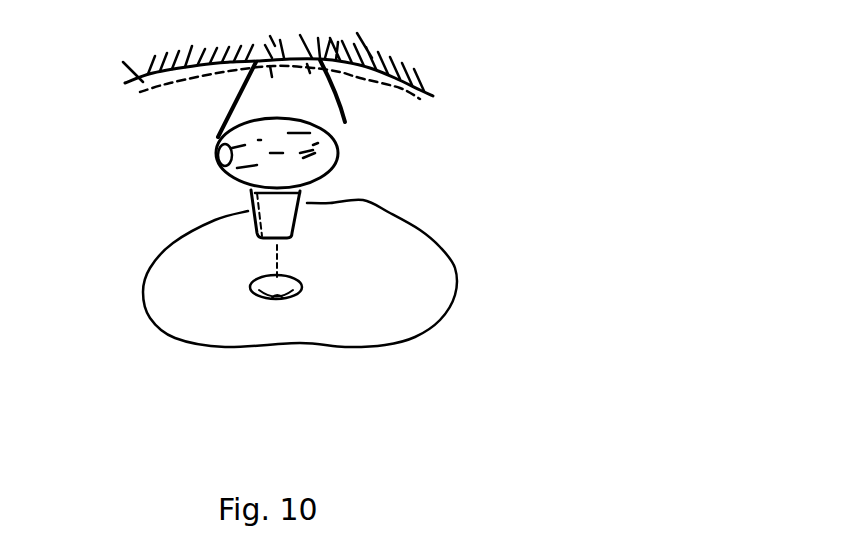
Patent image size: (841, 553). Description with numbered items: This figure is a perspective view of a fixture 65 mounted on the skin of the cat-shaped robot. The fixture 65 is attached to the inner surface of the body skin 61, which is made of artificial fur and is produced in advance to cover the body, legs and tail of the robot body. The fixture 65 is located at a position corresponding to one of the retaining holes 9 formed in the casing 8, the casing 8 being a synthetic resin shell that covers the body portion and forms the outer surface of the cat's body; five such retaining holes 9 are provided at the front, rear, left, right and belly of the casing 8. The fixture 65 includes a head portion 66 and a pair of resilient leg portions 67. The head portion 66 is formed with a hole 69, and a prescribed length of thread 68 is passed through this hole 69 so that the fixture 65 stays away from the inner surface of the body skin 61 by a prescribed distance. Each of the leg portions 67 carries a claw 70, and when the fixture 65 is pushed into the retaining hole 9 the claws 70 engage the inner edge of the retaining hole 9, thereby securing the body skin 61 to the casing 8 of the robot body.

The body skin 61 is at (413, 62).
The fixture 65 is at (344, 162).
The head portion 66 is at (218, 118).
The resilient leg portions 67 is at (253, 222).
The thread 68 is at (345, 118).
The hole 69 is at (218, 150).
The claw 70 is at (251, 190).
The casing 8 is at (443, 296).
The retaining hole 9 is at (290, 300).